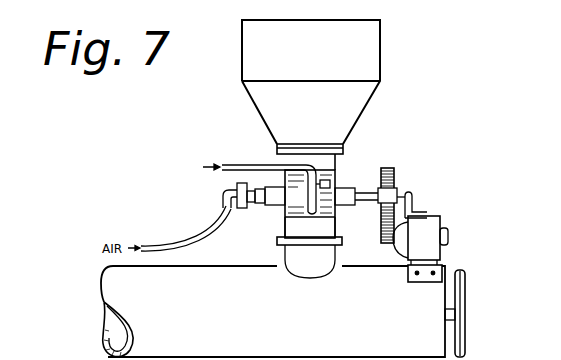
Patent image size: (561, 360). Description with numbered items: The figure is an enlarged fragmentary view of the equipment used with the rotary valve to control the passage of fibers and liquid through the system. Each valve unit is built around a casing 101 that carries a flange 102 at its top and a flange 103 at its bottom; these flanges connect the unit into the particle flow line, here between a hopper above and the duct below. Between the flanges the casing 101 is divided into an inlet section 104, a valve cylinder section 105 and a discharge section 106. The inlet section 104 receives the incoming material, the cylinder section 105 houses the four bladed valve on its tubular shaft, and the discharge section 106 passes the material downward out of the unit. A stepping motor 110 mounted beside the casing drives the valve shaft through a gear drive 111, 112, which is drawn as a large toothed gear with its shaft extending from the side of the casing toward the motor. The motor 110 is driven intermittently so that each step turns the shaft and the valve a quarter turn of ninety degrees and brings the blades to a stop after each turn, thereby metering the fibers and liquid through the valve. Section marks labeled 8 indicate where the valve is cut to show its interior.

The section line of FIG. 8 is at (313, 138).
The casing 101 is at (340, 180).
The flange 102 is at (346, 152).
The flange 103 is at (341, 240).
The inlet section 104 is at (288, 161).
The valve cylinder section 105 is at (310, 192).
The discharge section 106 is at (336, 229).
The stepping motor 110 is at (440, 222).
The gear drive 111 is at (388, 244).
The gear drive 112 is at (396, 182).